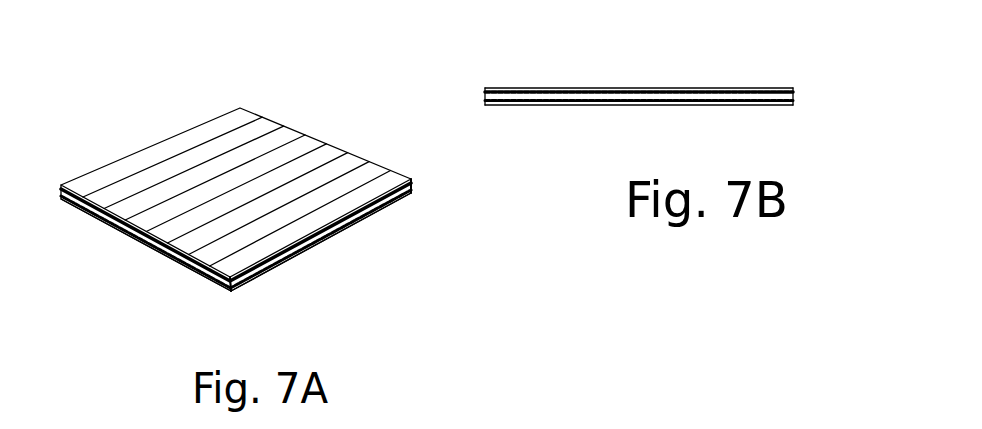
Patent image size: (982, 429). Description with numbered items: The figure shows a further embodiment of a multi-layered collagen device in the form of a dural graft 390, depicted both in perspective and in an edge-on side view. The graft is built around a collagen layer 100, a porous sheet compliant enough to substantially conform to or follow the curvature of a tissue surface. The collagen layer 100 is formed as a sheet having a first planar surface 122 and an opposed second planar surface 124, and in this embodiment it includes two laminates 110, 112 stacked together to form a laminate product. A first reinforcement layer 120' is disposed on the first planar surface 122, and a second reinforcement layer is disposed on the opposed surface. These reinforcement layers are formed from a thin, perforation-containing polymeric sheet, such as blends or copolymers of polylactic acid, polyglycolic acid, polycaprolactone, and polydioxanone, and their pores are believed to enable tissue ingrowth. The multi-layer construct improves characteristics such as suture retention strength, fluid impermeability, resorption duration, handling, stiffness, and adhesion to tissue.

In FIG. 7A, the dural graft 390 is at (304, 214).
In FIG. 7B, the dural graft 390 is at (681, 72).
In FIG. 7A, the collagen layer 100 is at (374, 212).
In FIG. 7B, the collagen layer 100 is at (677, 90).
In FIG. 7A, the laminate 110 is at (167, 148).
In FIG. 7B, the laminate 110 is at (675, 104).
In FIG. 7A, the laminate 112 is at (151, 245).
In FIG. 7B, the laminate 112 is at (560, 88).
In FIG. 7A, the first reinforcement layer 120' is at (281, 192).
In FIG. 7B, the first reinforcement layer 120' is at (681, 76).
In FIG. 7A, the first planar surface 122 is at (412, 186).
In FIG. 7A, the second planar surface 124 is at (222, 291).